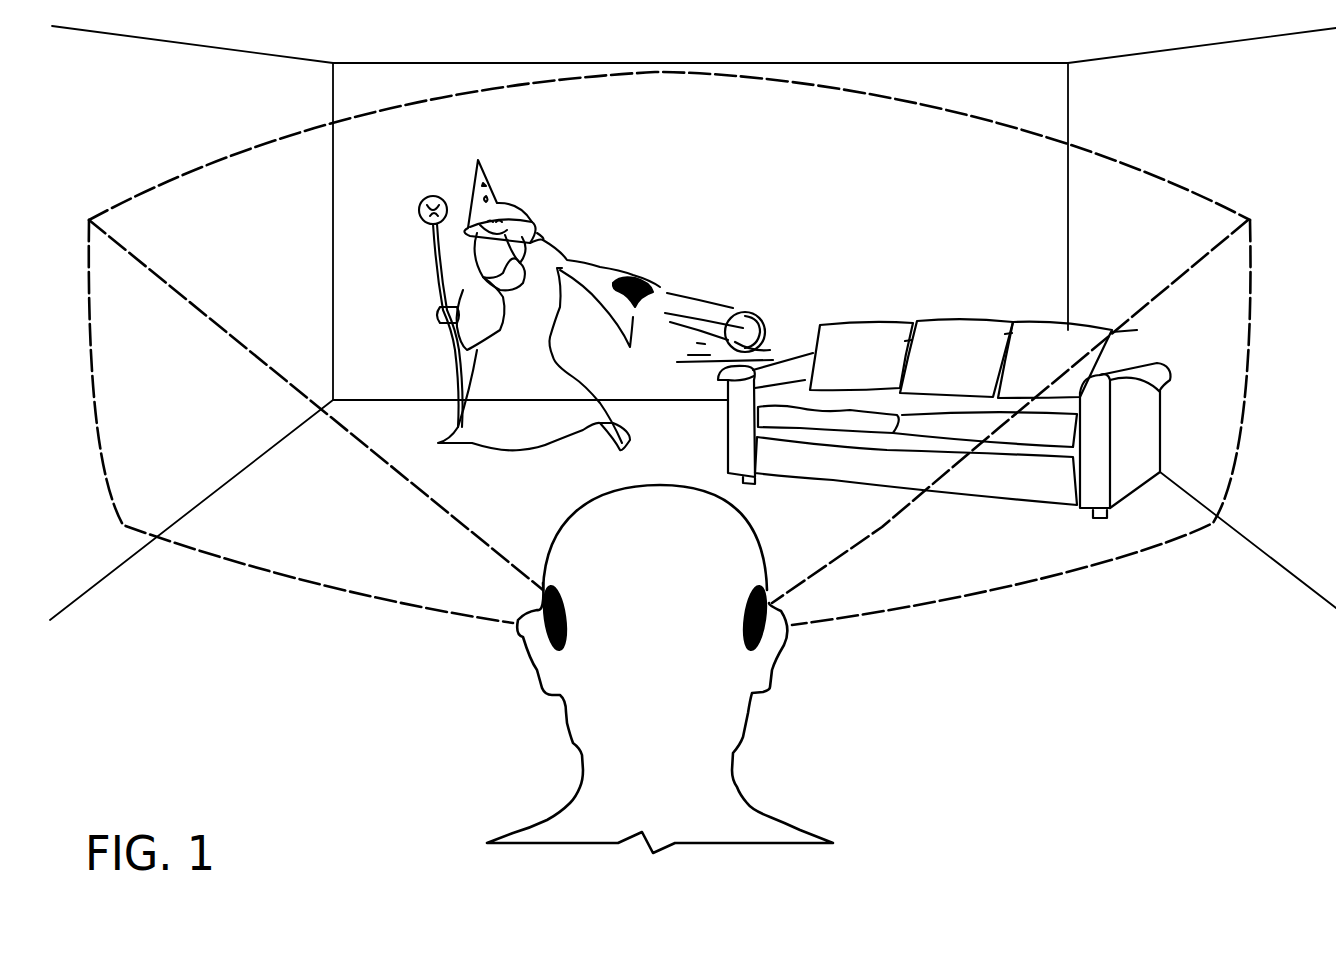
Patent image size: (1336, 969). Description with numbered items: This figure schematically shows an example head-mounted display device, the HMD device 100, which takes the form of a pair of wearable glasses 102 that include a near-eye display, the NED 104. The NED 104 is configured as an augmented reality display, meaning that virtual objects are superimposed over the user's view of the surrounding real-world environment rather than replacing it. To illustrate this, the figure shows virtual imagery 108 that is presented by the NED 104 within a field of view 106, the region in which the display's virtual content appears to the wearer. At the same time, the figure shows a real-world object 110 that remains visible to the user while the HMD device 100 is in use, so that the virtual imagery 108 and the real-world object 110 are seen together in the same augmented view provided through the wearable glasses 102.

The HMD device 100 is at (645, 654).
The wearable glasses 102 is at (764, 647).
The NED 104 is at (532, 552).
The field of view 106 is at (657, 70).
The virtual imagery 108 is at (547, 242).
The real-world object 110 is at (850, 318).